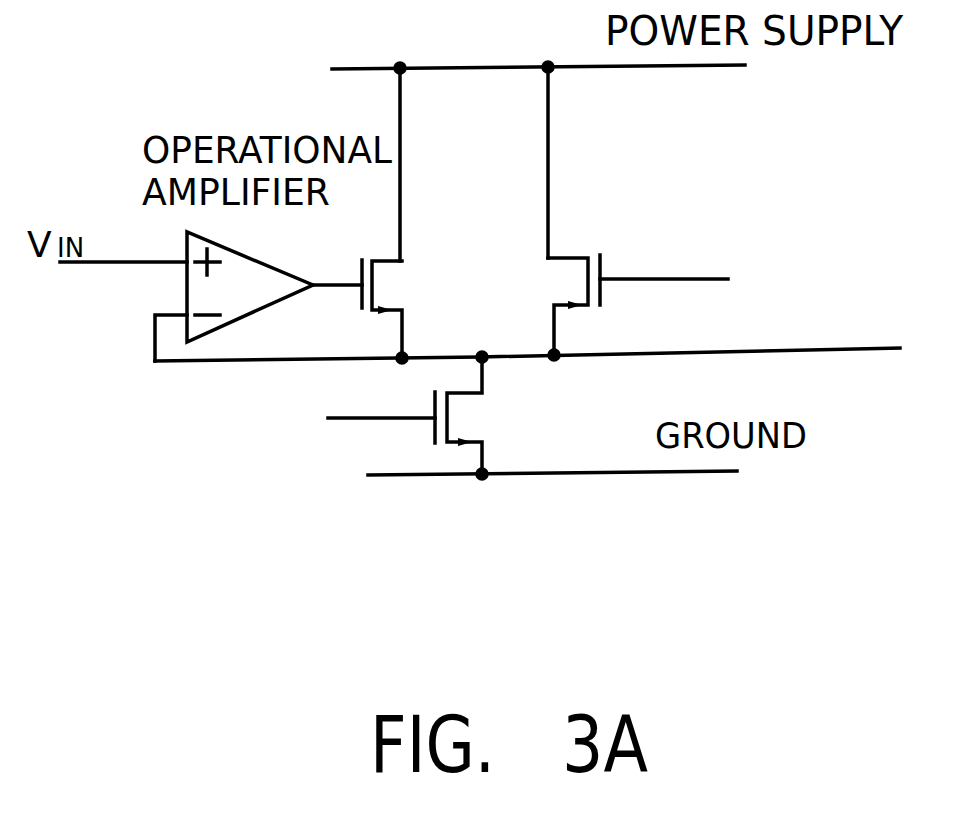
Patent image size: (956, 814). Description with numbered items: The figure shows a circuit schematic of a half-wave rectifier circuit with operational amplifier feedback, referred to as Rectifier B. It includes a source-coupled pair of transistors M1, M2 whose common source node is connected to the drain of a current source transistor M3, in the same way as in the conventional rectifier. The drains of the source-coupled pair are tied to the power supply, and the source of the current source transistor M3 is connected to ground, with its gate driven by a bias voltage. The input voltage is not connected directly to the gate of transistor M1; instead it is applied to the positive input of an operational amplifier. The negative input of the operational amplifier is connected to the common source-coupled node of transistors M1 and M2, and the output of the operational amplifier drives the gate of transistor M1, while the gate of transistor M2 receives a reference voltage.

The transistor M1 is at (408, 213).
The transistor M2 is at (619, 211).
The current source transistor M3 is at (430, 415).